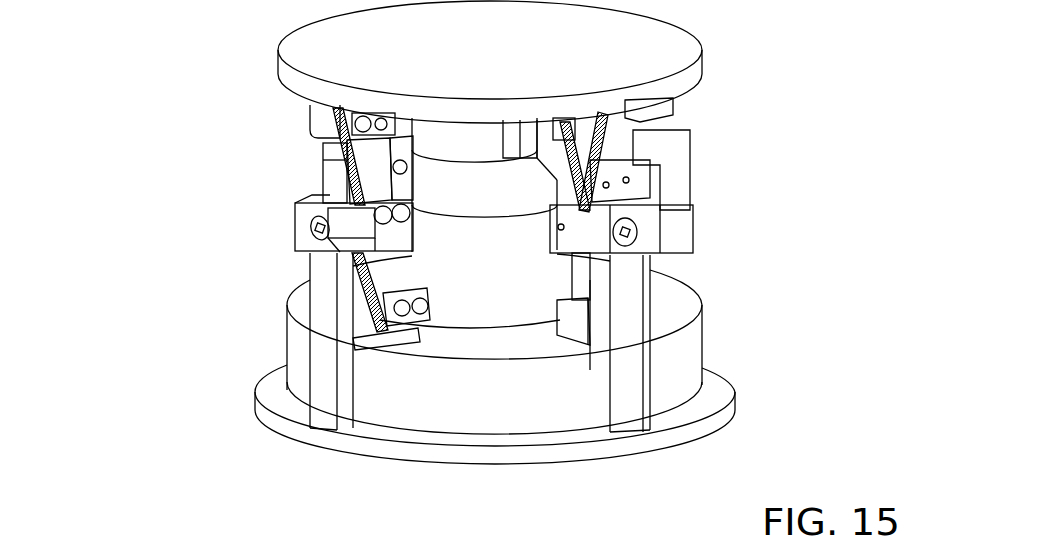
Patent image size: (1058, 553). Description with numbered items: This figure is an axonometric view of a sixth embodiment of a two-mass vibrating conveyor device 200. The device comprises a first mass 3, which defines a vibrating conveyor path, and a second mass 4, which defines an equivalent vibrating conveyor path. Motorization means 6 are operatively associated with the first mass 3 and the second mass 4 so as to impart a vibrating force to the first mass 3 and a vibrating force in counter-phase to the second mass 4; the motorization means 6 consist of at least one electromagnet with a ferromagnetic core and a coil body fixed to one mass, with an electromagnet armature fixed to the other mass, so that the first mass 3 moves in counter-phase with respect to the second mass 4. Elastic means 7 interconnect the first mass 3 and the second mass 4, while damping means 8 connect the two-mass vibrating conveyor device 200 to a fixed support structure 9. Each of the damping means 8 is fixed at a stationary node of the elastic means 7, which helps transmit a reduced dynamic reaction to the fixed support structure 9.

The two-mass vibrating conveyor device 200 is at (166, 82).
The first mass 3 is at (648, 94).
The second mass 4 is at (682, 376).
The motorization means 6 is at (505, 177).
The elastic means 7 is at (623, 139).
The damping means 8 is at (699, 159).
The fixed support structure 9 is at (432, 456).